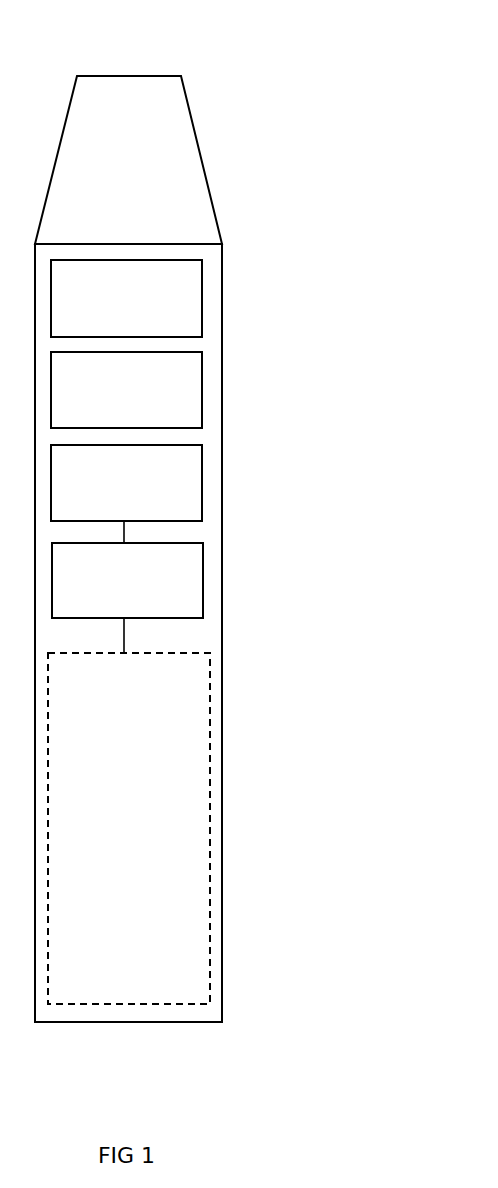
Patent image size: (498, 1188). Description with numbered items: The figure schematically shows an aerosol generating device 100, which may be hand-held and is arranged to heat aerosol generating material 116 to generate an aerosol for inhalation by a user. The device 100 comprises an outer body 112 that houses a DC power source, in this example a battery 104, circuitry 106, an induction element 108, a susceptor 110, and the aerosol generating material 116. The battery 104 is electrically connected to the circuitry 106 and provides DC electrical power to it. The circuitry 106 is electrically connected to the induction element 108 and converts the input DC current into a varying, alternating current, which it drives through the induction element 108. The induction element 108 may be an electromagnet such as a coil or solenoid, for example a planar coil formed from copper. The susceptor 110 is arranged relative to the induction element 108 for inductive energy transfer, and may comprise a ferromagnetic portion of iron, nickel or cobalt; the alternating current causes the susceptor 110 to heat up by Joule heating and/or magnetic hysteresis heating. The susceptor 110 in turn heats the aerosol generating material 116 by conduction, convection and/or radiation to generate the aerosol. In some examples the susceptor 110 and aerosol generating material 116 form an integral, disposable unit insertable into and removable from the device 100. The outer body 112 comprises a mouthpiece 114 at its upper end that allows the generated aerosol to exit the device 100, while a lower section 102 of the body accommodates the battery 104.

The aerosol generating device 100 is at (206, 521).
The power supply section 102 is at (223, 907).
The battery 104 is at (143, 830).
The circuitry 106 is at (138, 589).
The induction element 108 is at (137, 499).
The susceptor 110 is at (138, 404).
The outer body 112 is at (223, 582).
The mouthpiece 114 is at (200, 153).
The aerosol generating material 116 is at (141, 314).